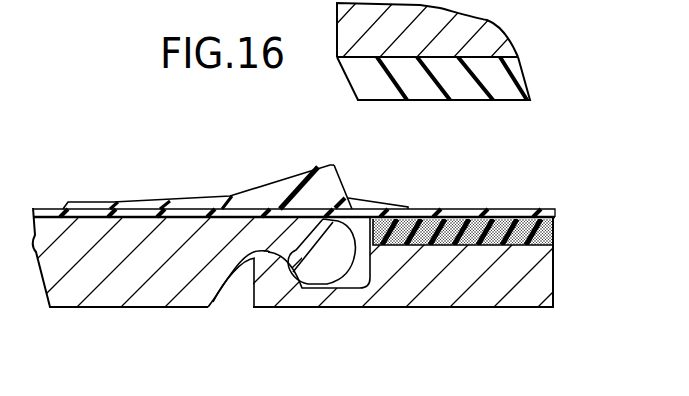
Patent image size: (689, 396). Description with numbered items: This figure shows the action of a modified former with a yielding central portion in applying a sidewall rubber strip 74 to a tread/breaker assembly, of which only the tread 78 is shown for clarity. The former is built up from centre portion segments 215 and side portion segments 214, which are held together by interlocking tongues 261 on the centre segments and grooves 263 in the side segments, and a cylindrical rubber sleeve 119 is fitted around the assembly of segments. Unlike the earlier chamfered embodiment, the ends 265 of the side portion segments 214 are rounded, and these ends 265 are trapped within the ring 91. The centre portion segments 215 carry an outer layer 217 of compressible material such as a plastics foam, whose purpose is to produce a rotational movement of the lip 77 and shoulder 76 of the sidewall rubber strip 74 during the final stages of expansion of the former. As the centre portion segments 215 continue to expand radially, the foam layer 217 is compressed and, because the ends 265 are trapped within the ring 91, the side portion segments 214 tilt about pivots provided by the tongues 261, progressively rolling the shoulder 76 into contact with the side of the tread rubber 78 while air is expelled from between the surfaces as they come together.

The sidewall rubber strip 74 is at (280, 188).
The shoulder 76 is at (346, 185).
The lip 77 is at (385, 206).
The tread 78 is at (512, 87).
The ring 91 is at (490, 33).
The cylindrical rubber sleeve 119 is at (102, 214).
The side portion segments 214 is at (130, 293).
The centre portion segments 215 is at (483, 298).
The outer layer of compressible material 217 is at (495, 218).
The tongues 261 is at (268, 278).
The grooves 263 is at (226, 282).
The ends 265 is at (342, 250).